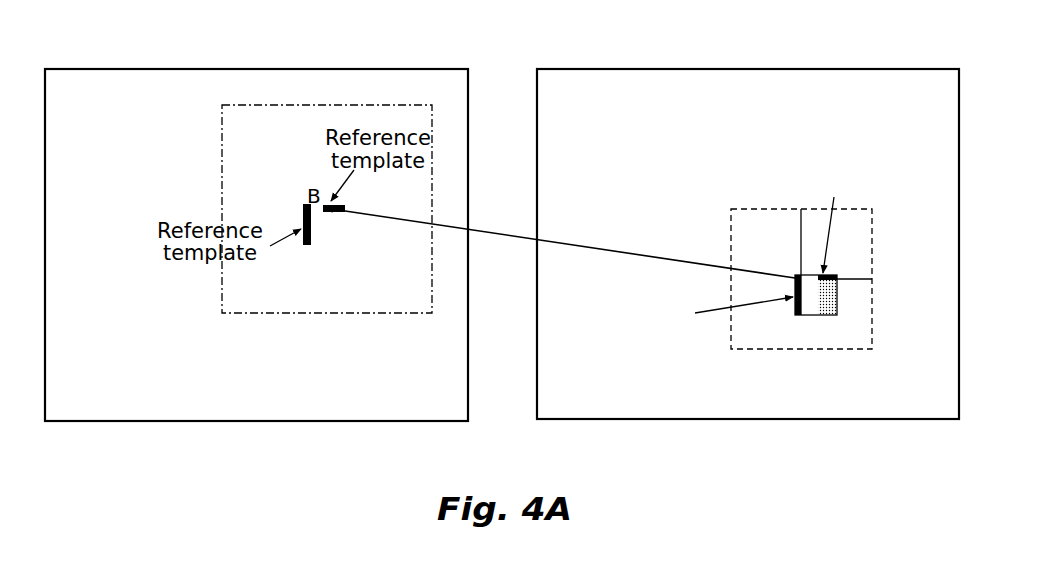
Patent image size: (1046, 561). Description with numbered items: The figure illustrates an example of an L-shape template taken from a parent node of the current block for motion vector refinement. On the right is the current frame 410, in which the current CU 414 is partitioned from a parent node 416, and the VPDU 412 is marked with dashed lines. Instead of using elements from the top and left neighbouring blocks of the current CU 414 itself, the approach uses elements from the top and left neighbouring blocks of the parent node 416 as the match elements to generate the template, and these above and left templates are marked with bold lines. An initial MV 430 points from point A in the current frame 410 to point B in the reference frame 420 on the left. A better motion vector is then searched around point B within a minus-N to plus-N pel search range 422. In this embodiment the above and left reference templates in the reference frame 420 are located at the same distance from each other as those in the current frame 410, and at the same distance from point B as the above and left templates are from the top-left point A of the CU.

The current frame 410 is at (872, 69).
The VPDU 412 is at (774, 350).
The current CU 414 is at (833, 316).
The parent node 416 is at (801, 316).
The reference frame 420 is at (378, 69).
The search range 422 is at (270, 105).
The initial MV 430 is at (480, 228).